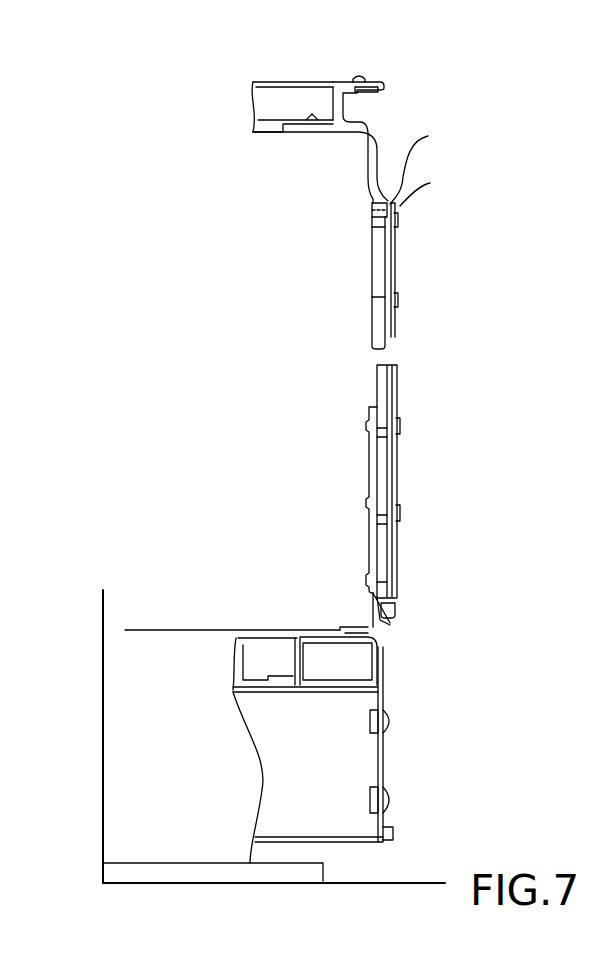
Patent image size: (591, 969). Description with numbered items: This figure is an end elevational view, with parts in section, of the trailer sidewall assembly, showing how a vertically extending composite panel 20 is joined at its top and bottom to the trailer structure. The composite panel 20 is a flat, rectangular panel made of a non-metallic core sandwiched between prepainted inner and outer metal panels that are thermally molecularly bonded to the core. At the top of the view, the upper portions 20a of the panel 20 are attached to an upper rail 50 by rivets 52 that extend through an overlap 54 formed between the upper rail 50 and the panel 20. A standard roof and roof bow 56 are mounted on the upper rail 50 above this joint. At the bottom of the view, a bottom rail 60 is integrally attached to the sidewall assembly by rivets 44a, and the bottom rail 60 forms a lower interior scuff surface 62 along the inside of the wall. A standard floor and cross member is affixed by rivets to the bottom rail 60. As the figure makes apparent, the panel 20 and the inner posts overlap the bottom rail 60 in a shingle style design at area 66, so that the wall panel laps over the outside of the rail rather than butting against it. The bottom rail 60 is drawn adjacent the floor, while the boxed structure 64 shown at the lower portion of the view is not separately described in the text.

The roof bow 56 is at (293, 100).
The upper rail 50 is at (372, 131).
The overlap 54 is at (428, 160).
The rivets 52 is at (425, 179).
The upper portions 20a is at (370, 213).
The composite panel 20 is at (382, 458).
The lower interior scuff surface 62 is at (369, 524).
The overlap area 66 is at (387, 613).
The bottom rail 60 is at (390, 633).
The housing box 64 is at (325, 660).
The rivets 44a is at (397, 722).